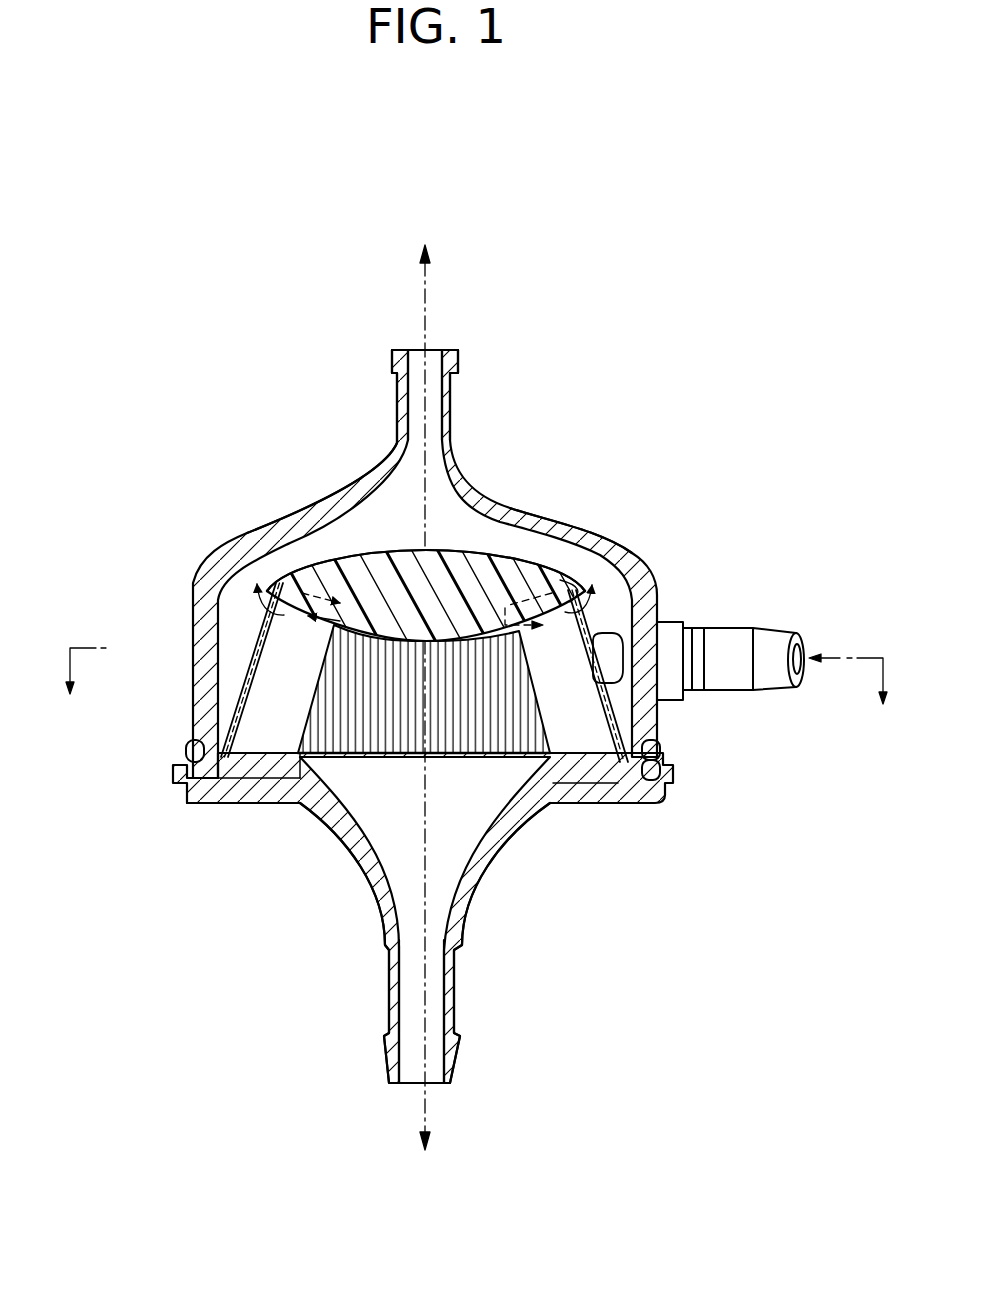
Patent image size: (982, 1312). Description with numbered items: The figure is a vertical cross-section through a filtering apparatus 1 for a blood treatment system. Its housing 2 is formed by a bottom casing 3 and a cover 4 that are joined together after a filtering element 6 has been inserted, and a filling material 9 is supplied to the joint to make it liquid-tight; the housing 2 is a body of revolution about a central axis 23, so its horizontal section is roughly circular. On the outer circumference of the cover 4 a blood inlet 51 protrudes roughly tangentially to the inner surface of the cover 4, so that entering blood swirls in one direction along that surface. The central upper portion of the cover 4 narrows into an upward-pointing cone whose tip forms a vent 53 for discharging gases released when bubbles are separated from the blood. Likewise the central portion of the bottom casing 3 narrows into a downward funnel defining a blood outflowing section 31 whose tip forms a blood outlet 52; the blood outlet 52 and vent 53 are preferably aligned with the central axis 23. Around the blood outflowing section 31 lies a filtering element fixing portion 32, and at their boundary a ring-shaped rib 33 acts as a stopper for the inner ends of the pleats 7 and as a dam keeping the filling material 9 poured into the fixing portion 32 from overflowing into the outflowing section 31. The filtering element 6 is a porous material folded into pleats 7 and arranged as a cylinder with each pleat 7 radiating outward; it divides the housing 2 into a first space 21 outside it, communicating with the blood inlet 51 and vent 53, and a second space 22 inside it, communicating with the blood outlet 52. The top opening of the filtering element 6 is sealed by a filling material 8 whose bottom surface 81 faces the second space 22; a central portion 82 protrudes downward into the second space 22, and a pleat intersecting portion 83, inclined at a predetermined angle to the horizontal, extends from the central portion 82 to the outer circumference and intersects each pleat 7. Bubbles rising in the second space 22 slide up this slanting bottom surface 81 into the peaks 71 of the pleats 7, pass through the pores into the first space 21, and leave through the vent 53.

The filtering apparatus 1 is at (680, 393).
The housing 2 is at (228, 535).
The bottom casing 3 is at (565, 770).
The cover 4 is at (292, 527).
The filtering element 6 is at (248, 659).
The pleat 7 is at (573, 713).
The filling material 8 is at (508, 644).
The filling material 9 is at (195, 780).
The first space 21 is at (587, 577).
The second space 22 is at (447, 823).
The central axis 23 is at (425, 310).
The blood outflowing section 31 is at (362, 853).
The filtering element fixing portion 32 is at (295, 815).
The rib 33 is at (315, 765).
The blood inlet 51 is at (730, 652).
The blood outlet 52 is at (410, 1013).
The vent 53 is at (428, 393).
The peak 71 is at (253, 617).
The bottom surface 81 is at (478, 740).
The central portion 82 is at (415, 605).
The pleat intersecting portion 83 is at (625, 582).